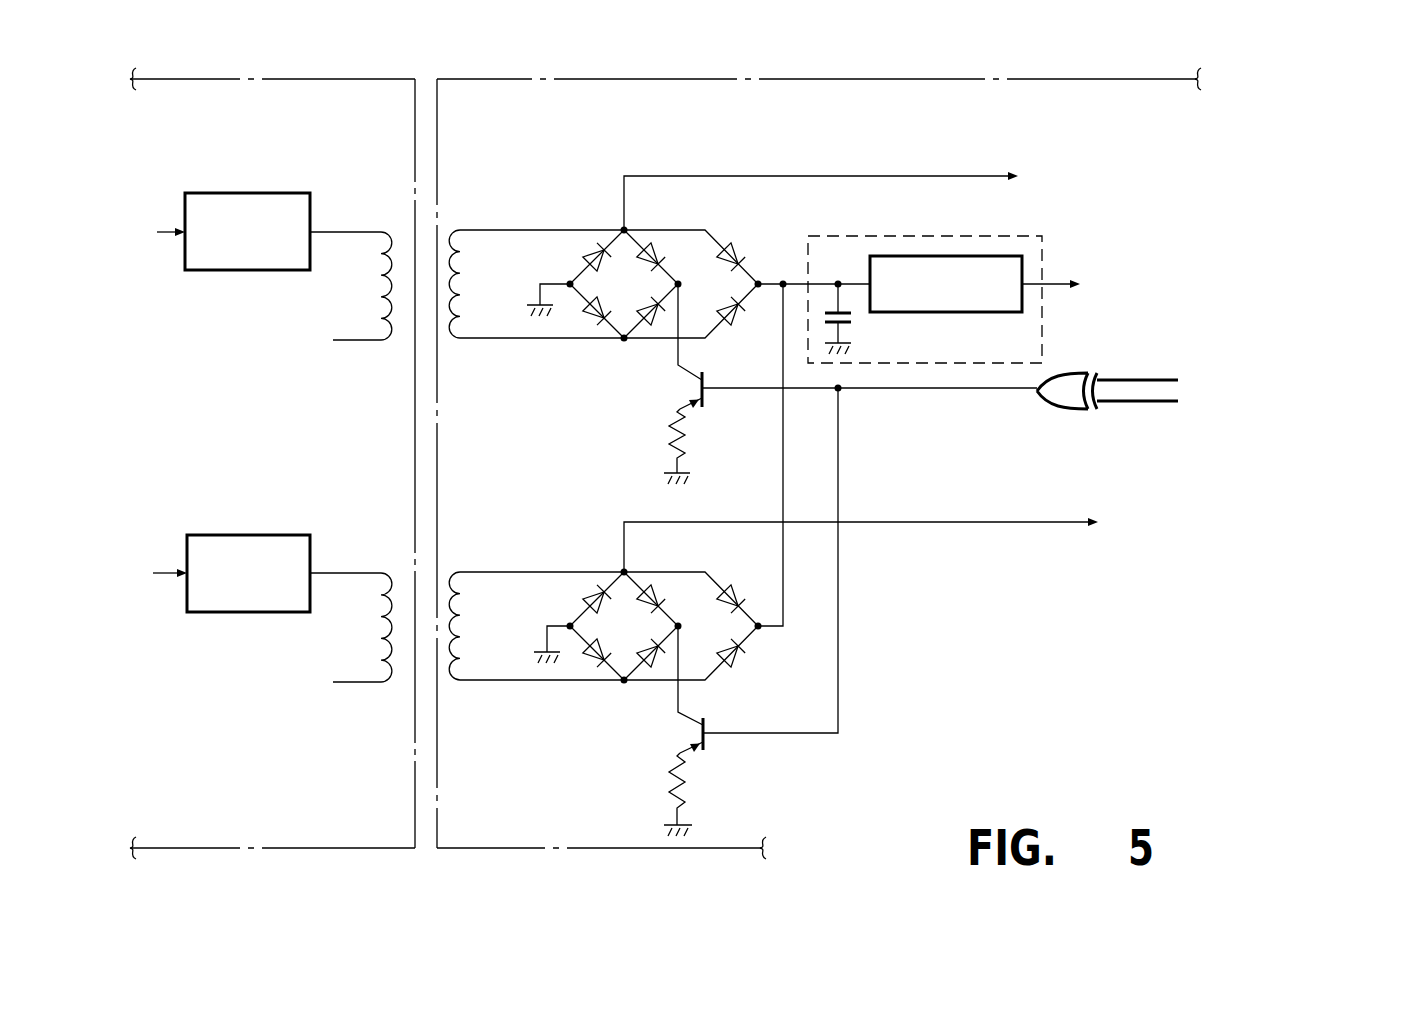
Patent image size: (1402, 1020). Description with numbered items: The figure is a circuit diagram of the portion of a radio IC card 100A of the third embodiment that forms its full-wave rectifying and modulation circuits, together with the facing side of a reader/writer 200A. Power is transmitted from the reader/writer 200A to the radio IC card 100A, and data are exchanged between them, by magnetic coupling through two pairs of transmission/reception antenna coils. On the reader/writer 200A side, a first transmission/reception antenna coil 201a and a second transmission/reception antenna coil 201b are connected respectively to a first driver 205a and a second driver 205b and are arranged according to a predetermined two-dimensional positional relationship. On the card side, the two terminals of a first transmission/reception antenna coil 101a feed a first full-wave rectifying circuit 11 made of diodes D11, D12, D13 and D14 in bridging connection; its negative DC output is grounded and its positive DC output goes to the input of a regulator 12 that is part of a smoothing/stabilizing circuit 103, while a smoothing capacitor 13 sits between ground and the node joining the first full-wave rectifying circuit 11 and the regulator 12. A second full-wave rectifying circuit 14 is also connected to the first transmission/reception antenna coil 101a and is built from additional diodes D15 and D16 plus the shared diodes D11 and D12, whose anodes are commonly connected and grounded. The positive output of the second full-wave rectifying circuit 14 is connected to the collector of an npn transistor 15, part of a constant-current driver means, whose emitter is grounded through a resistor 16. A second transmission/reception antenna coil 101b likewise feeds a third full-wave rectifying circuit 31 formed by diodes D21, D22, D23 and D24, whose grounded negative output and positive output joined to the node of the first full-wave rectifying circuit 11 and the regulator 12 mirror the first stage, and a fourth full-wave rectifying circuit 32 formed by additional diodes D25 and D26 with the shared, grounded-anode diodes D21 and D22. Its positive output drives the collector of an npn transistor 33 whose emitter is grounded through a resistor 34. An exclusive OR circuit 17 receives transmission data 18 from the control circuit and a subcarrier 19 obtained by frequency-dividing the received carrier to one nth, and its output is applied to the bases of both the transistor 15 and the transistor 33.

The reader/writer 200A is at (311, 79).
The radio IC card 100A is at (958, 79).
The first driver 205a is at (286, 170).
The second driver 205b is at (214, 535).
The first transmission/reception antenna coil 201a is at (383, 247).
The second transmission/reception antenna coil 201b is at (375, 597).
The first transmission/reception antenna coil 101a is at (448, 243).
The second transmission/reception antenna coil 101b is at (450, 580).
The second full-wave rectifying circuit 14 is at (615, 263).
The first full-wave rectifying circuit 11 is at (663, 236).
The diode D11 is at (581, 261).
The diode D12 is at (584, 318).
The diode D13 is at (735, 245).
The diode D14 is at (740, 324).
The additional diode D15 is at (657, 253).
The additional diode D16 is at (648, 328).
The smoothing/stabilizing circuit 103 is at (947, 236).
The regulator 12 is at (953, 313).
The smoothing capacitor 13 is at (853, 317).
The npn transistor 15 is at (704, 396).
The resistor 16 is at (668, 438).
The exclusive OR circuit 17 is at (1047, 407).
The transmission data 18 is at (1144, 378).
The subcarrier 19 is at (1148, 403).
The fourth full-wave rectifying circuit 32 is at (625, 612).
The third full-wave rectifying circuit 31 is at (660, 582).
The diode D21 is at (585, 600).
The diode D22 is at (590, 655).
The diode D23 is at (737, 604).
The diode D24 is at (740, 658).
The additional diode D25 is at (668, 598).
The additional diode D26 is at (650, 667).
The npn transistor 33 is at (704, 740).
The resistor 34 is at (668, 779).